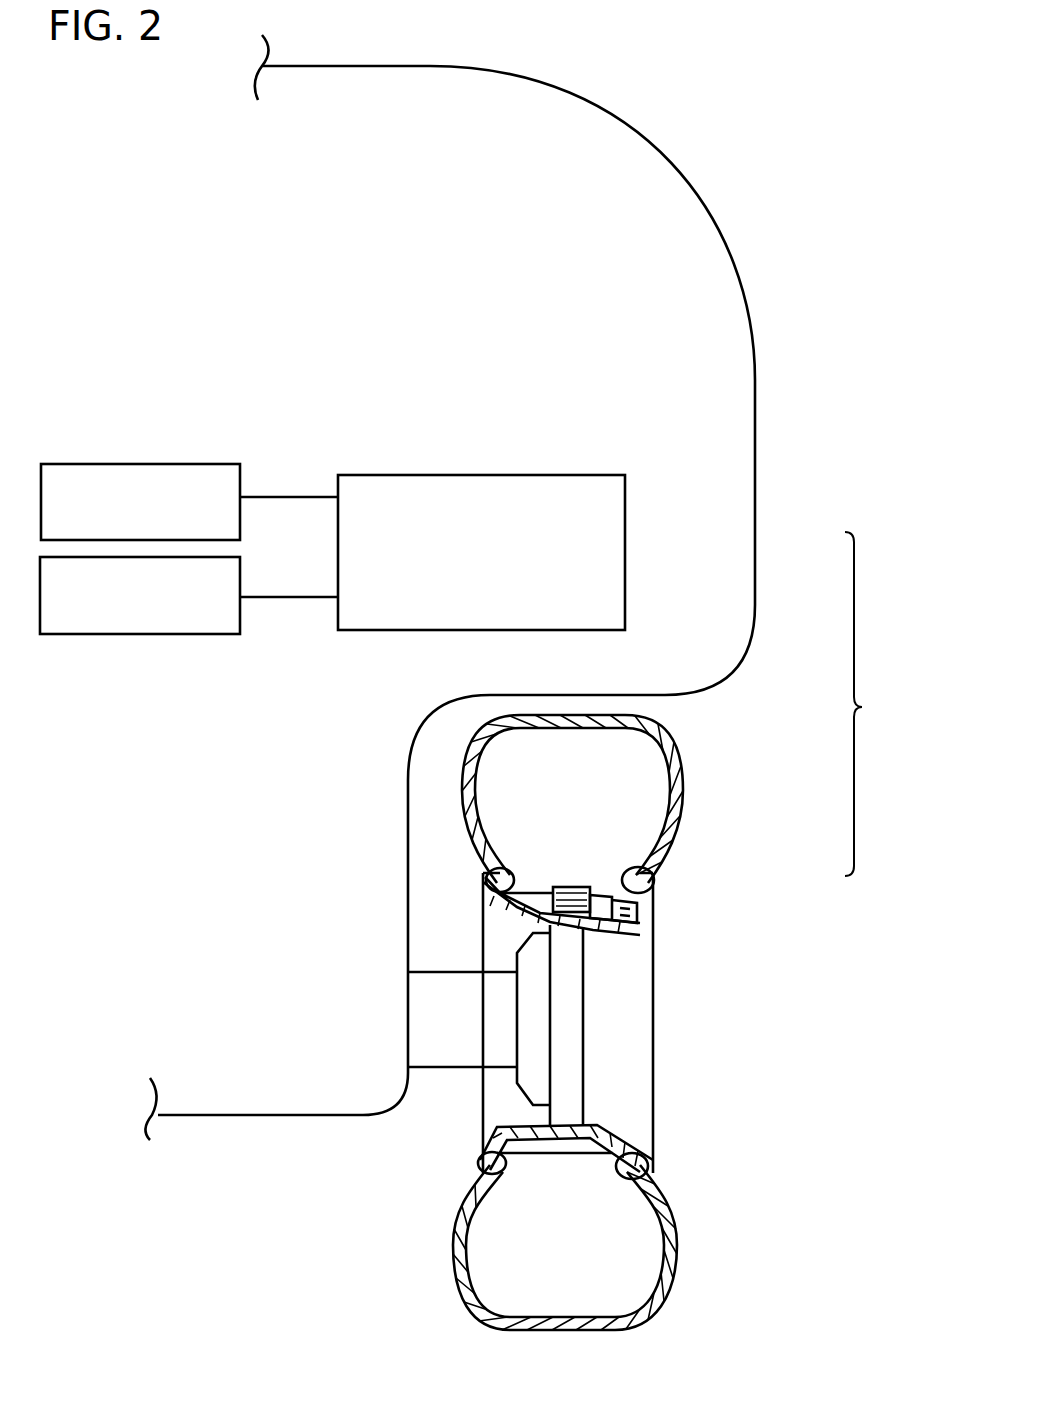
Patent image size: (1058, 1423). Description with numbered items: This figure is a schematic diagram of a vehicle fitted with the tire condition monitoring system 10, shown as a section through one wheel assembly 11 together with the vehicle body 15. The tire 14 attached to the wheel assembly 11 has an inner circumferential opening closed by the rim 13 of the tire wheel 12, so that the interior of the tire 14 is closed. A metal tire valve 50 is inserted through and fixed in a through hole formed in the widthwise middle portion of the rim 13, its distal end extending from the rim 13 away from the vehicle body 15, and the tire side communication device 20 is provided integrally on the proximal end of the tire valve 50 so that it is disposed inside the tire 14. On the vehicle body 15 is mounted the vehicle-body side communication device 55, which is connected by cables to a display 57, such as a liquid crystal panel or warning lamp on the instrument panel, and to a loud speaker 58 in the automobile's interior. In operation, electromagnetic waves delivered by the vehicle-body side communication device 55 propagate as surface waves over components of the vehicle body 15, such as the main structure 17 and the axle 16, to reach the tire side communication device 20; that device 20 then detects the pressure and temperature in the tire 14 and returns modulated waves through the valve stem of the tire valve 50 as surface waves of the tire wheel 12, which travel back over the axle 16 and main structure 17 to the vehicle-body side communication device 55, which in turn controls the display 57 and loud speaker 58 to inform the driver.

The tire condition monitoring system 10 is at (878, 704).
The wheel assembly 11 is at (647, 1022).
The tire wheel 12 is at (655, 988).
The rim 13 is at (588, 925).
The tire 14 is at (679, 794).
The vehicle body 15 is at (712, 166).
The axle 16 is at (428, 1057).
The main structure 17 is at (727, 462).
The tire side communication device 20 is at (603, 883).
The tire valve 50 is at (640, 907).
The vehicle-body side communication device 55 is at (625, 560).
The display 57 is at (183, 637).
The loud speaker 58 is at (170, 463).